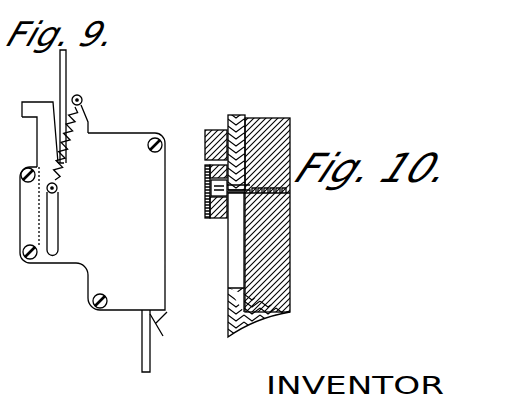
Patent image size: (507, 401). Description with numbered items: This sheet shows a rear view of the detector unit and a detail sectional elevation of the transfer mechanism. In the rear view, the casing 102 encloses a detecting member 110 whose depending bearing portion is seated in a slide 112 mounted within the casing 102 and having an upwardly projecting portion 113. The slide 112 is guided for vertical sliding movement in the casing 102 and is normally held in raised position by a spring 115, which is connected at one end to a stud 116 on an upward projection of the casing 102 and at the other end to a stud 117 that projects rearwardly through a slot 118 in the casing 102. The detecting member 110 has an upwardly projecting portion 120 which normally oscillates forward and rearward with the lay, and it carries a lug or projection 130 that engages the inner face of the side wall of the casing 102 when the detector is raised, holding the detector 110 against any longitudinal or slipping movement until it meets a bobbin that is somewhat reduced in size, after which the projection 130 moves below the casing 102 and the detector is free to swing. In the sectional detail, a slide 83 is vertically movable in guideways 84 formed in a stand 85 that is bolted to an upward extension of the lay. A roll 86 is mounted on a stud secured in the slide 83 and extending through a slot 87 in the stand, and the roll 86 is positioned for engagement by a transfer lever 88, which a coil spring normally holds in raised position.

In FIG. 10, the slide 83 is at (290, 134).
In FIG. 10, the guideways 84 is at (228, 313).
In FIG. 10, the stand 85 is at (209, 186).
In FIG. 10, the roll 86 is at (208, 162).
In FIG. 10, the slot 87 is at (229, 258).
In FIG. 10, the transfer lever 88 is at (214, 130).
In FIG. 9, the casing 102 is at (100, 272).
In FIG. 9, the detecting member 110 is at (143, 352).
In FIG. 9, the slide 112 is at (50, 145).
In FIG. 9, the upwardly projecting portion 113 is at (21, 104).
In FIG. 9, the spring 115 is at (80, 116).
In FIG. 9, the stud 116 is at (83, 99).
In FIG. 9, the stud 117 is at (58, 190).
In FIG. 9, the slot 118 is at (58, 232).
In FIG. 9, the upwardly projecting portion 120 is at (65, 86).
In FIG. 9, the lug or projection 130 is at (169, 329).